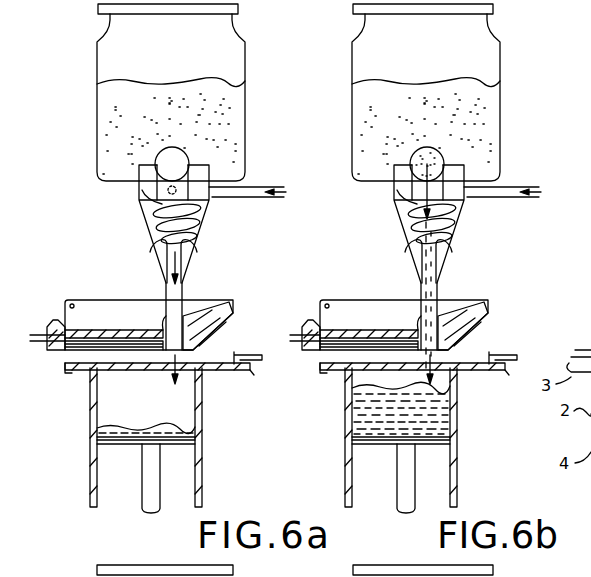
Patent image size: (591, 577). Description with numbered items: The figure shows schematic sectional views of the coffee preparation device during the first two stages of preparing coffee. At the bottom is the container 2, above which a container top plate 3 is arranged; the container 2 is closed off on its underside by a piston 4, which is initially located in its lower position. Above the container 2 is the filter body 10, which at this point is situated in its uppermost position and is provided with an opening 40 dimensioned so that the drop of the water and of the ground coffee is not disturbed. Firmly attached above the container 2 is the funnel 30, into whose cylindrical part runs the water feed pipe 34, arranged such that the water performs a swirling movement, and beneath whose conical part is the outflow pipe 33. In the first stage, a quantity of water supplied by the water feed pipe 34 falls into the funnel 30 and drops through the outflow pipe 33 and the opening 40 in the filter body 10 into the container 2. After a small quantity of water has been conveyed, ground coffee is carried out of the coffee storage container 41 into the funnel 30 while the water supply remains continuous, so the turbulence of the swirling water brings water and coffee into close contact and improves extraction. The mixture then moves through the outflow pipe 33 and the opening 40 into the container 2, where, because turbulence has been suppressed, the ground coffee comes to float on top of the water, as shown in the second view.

In FIG. 6A, the coffee storage container 41 is at (223, 113).
In FIG. 6B, the coffee storage container 41 is at (440, 92).
In FIG. 6A, the funnel 30 is at (202, 229).
In FIG. 6B, the funnel 30 is at (449, 215).
In FIG. 6A, the water feed pipe 34 is at (232, 194).
In FIG. 6B, the water feed pipe 34 is at (502, 192).
In FIG. 6A, the outflow pipe 33 is at (184, 296).
In FIG. 6B, the outflow pipe 33 is at (454, 303).
In FIG. 6A, the opening 40 is at (152, 308).
In FIG. 6B, the opening 40 is at (355, 304).
In FIG. 6A, the filter body 10 is at (103, 329).
In FIG. 6B, the filter body 10 is at (397, 304).
In FIG. 6A, the container top plate 3 is at (63, 373).
In FIG. 6B, the container top plate 3 is at (401, 372).
In FIG. 6A, the container 2 is at (92, 414).
In FIG. 6B, the container 2 is at (383, 437).
In FIG. 6A, the piston 4 is at (118, 444).
In FIG. 6B, the piston 4 is at (380, 476).